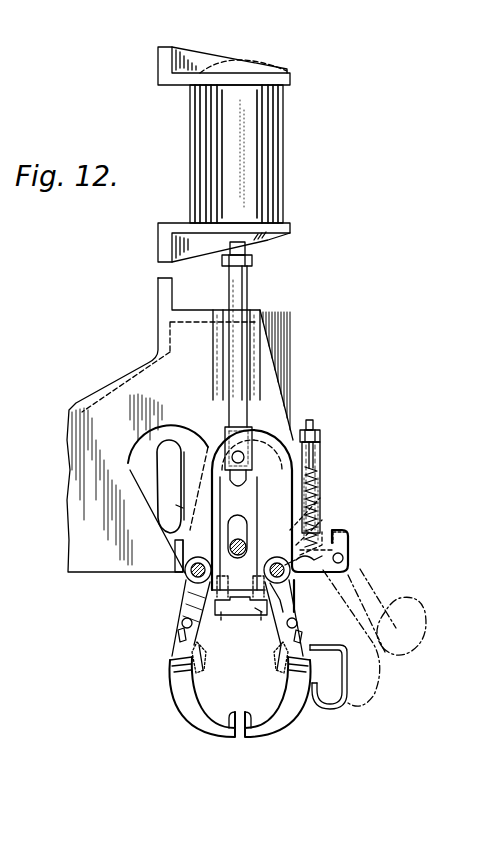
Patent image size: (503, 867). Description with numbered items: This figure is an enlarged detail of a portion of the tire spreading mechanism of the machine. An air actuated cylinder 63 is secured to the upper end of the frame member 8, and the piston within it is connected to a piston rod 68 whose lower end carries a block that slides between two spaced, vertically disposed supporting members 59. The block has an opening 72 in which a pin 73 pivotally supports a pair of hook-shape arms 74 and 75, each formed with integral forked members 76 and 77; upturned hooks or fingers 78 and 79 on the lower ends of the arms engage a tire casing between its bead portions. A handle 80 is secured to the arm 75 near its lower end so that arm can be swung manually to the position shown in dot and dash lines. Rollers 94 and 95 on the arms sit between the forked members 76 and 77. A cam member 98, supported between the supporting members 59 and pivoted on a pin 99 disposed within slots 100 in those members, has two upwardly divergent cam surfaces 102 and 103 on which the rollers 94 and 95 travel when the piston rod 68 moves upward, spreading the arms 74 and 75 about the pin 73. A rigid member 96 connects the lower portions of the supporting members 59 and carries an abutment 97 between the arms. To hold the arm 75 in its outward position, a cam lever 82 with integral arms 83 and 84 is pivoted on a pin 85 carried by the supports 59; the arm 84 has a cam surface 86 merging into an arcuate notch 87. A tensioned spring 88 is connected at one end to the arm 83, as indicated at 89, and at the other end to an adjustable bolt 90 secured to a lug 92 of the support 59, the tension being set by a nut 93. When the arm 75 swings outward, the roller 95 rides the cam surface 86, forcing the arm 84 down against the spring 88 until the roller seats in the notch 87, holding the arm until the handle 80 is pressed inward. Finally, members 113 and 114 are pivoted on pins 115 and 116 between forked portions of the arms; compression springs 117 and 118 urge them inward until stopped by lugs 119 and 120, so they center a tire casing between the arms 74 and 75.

The frame member 8 is at (158, 57).
The air actuated cylinder 63 is at (256, 203).
The piston rod 68 is at (248, 278).
The opening 72 is at (256, 440).
The pin 73 is at (234, 452).
The cam member 98 is at (157, 458).
The cam surface 102 is at (183, 508).
The hook-shape arm 74 is at (180, 550).
The roller 94 is at (186, 576).
The roller 95 is at (264, 572).
The forked member 76 is at (186, 598).
The hook-shape arm 75 is at (300, 598).
The rigid member 96 is at (270, 585).
The abutment 97 is at (238, 616).
The forked member 77 is at (262, 612).
The pin 99 is at (232, 556).
The slot 100 is at (252, 510).
The cam surface 86 is at (290, 566).
The arm 84 is at (312, 566).
The pin 85 is at (343, 558).
The arcuate notch 87 is at (333, 550).
The cam lever 82 is at (348, 536).
The arm 83 is at (340, 530).
The spring connection 89 is at (318, 520).
The spring 88 is at (318, 487).
The cam surface 103 is at (312, 480).
The supporting member 59 is at (321, 458).
The lug 92 is at (321, 444).
The nut 93 is at (318, 432).
The adjustable bolt 90 is at (312, 420).
The pin 115 is at (182, 622).
The pin 116 is at (297, 621).
The stop member 119 is at (178, 636).
The stop member 120 is at (302, 634).
The compression spring 117 is at (170, 662).
The compression spring 118 is at (310, 662).
The centering member 113 is at (205, 662).
The centering member 114 is at (276, 660).
The upturned hook 78 is at (233, 712).
The upturned hook 79 is at (247, 712).
The handle 80 is at (347, 665).